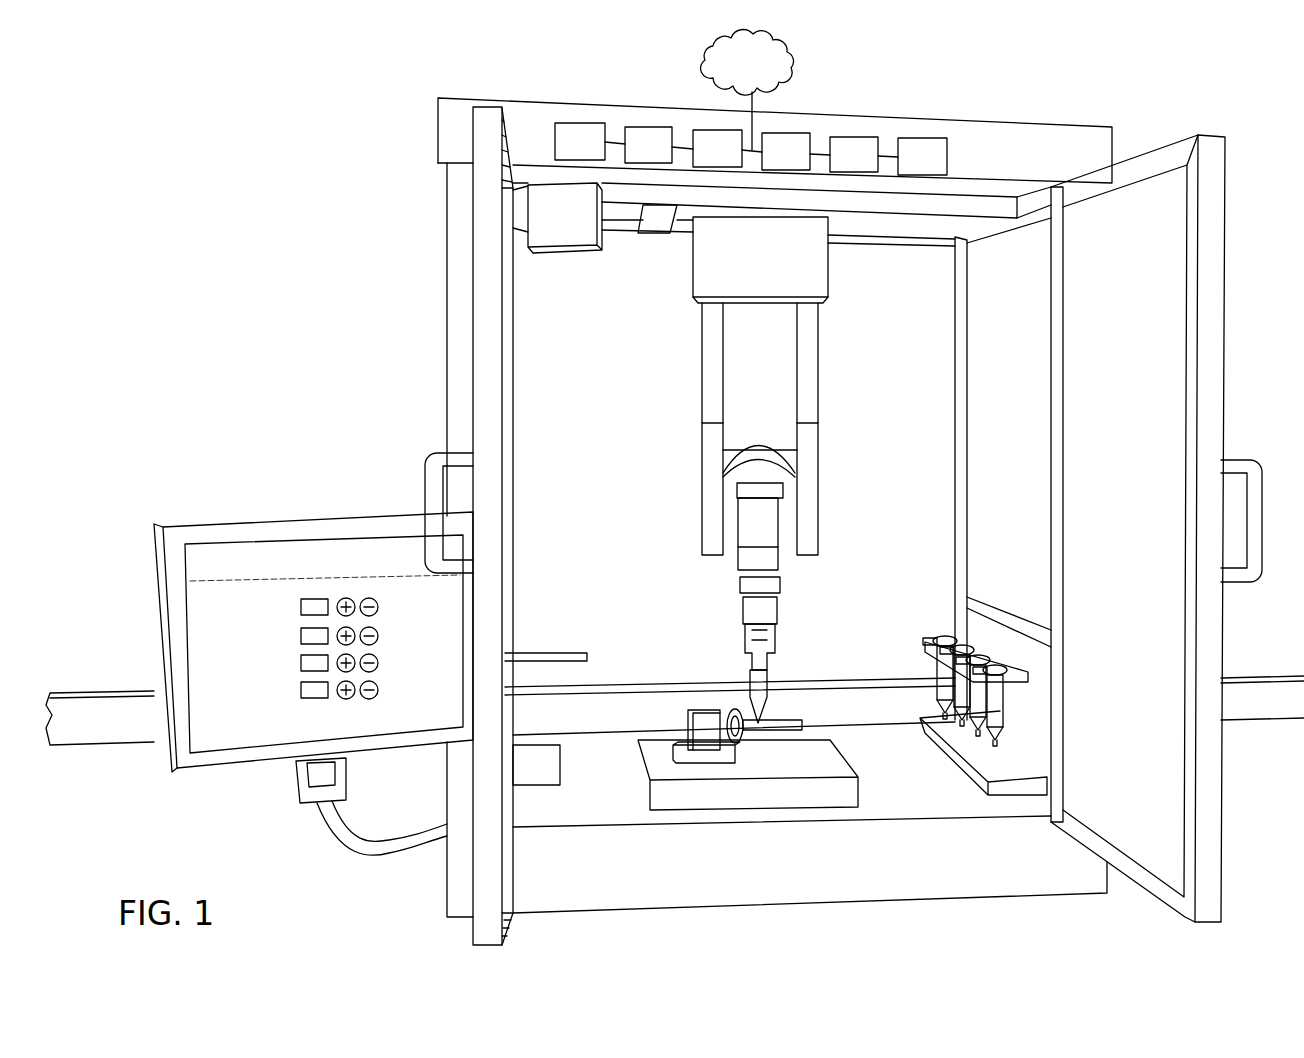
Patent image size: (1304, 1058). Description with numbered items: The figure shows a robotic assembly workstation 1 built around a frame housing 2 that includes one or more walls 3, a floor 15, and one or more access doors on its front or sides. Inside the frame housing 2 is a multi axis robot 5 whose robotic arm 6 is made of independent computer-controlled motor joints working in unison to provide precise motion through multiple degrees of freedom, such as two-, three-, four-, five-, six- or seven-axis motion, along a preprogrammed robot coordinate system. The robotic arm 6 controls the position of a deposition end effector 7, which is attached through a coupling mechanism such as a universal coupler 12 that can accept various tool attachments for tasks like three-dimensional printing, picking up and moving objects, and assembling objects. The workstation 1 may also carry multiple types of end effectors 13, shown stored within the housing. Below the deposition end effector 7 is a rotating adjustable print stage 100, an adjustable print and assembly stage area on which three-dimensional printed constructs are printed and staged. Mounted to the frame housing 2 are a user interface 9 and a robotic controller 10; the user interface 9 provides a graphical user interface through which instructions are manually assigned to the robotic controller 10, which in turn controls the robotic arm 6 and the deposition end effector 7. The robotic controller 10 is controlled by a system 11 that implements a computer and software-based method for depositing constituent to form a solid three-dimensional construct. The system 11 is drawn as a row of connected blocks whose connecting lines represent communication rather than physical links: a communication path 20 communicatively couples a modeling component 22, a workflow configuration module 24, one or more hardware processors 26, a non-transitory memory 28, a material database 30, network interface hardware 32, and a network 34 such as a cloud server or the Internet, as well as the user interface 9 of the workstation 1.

The robotic assembly workstation 1 is at (395, 237).
The frame housing 2 is at (1112, 138).
The walls 3 is at (980, 345).
The multi axis robot 5 is at (676, 377).
The robotic arm 6 is at (770, 525).
The deposition end effector 7 is at (760, 674).
The user interface 9 is at (238, 517).
The robotic controller 10 is at (545, 229).
The system 11 is at (709, 116).
The universal coupler 12 is at (772, 585).
The end effectors 13 is at (925, 627).
The floor 15 is at (887, 793).
The communication path 20 is at (752, 103).
The modeling component 22 is at (566, 156).
The workflow configuration module 24 is at (634, 160).
The hardware processors 26 is at (703, 163).
The non-transitory memory 28 is at (772, 166).
The material database 30 is at (840, 170).
The network interface hardware 32 is at (908, 173).
The network 34 is at (732, 74).
The rotating adjustable print stage 100 is at (707, 681).